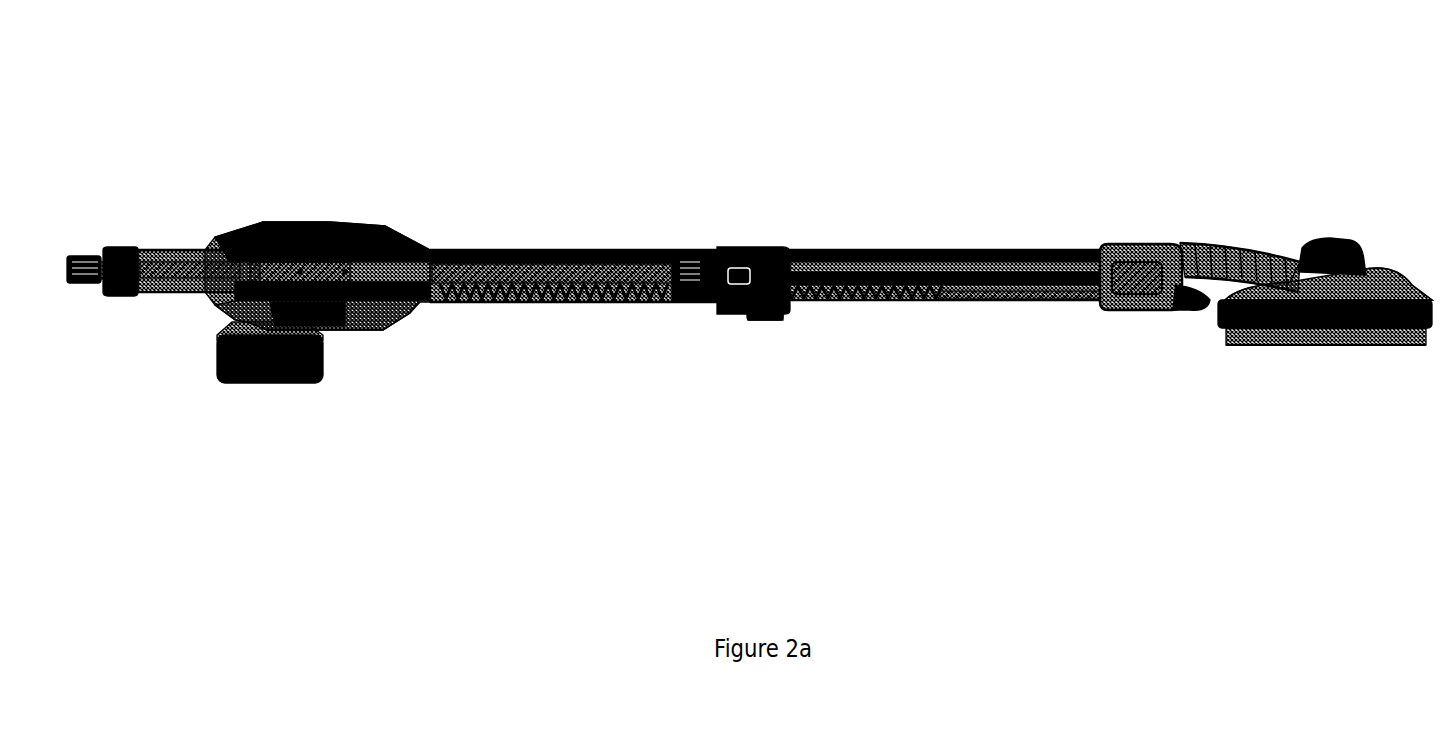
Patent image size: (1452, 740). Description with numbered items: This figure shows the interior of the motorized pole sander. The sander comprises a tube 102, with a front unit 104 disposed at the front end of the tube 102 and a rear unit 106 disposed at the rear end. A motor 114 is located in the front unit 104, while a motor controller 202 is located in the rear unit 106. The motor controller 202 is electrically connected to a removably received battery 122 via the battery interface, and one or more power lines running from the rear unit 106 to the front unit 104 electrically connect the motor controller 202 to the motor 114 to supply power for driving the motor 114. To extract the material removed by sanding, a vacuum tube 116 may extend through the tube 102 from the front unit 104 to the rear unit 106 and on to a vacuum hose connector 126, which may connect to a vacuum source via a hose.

The rear unit 106 is at (226, 122).
The front unit 104 is at (1275, 122).
The tube 102 is at (580, 255).
The vacuum hose connector 126 is at (75, 256).
The battery 122 is at (243, 383).
The motor controller 202 is at (362, 332).
The vacuum tube 116 is at (1205, 245).
The motor 114 is at (1334, 238).